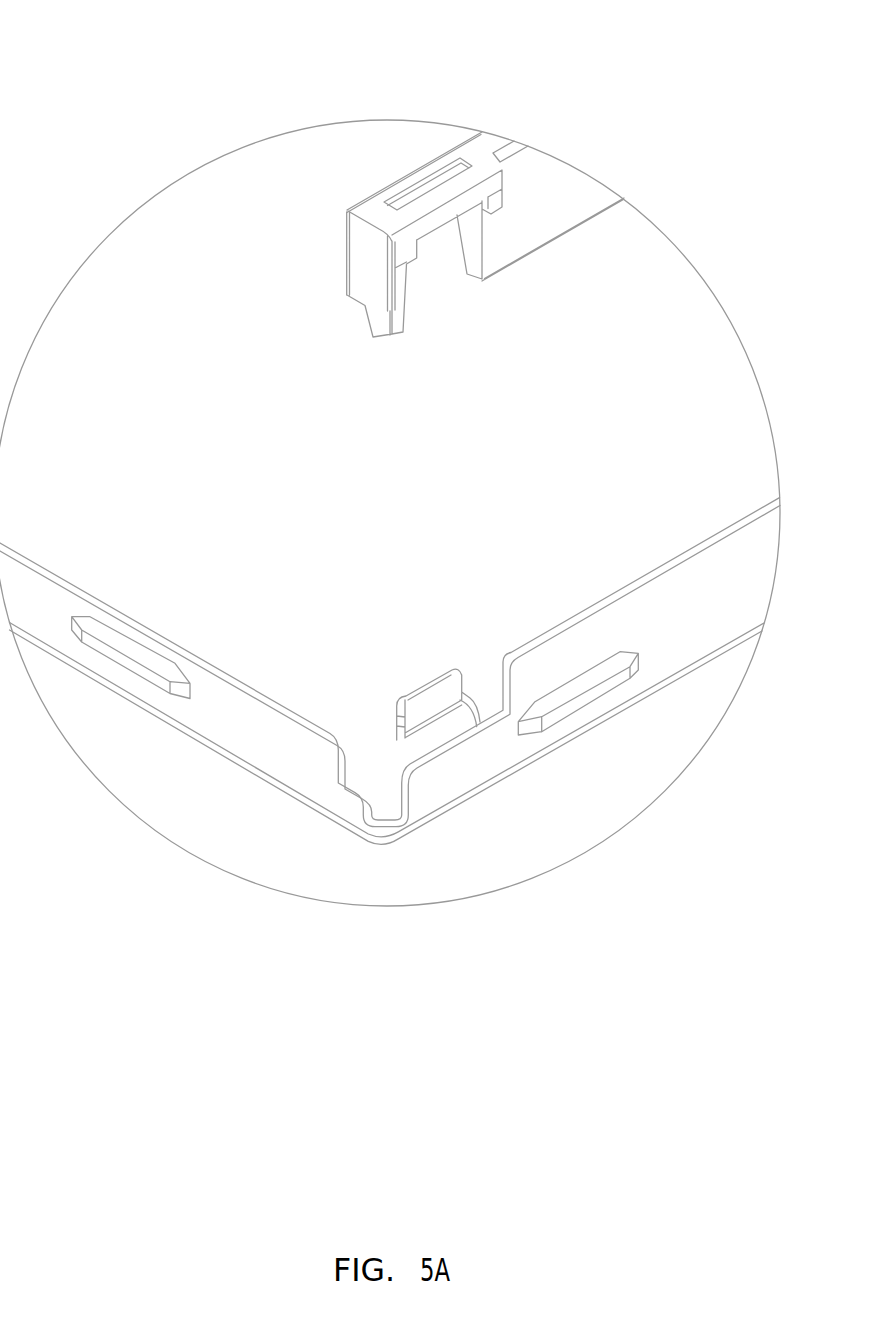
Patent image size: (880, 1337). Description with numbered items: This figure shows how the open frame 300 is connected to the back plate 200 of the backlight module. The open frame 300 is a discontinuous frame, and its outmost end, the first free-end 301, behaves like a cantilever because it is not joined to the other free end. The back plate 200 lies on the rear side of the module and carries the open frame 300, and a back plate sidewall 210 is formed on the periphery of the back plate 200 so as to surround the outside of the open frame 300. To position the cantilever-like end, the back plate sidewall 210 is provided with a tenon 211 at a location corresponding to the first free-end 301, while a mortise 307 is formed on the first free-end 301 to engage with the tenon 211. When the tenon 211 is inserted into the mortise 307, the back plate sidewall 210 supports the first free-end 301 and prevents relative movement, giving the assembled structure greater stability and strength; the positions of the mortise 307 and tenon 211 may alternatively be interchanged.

The back plate 200 is at (300, 678).
The back plate sidewall 210 is at (678, 620).
The tenon 211 is at (432, 705).
The open frame 300 is at (556, 188).
The first free-end 301 is at (362, 252).
The mortise 307 is at (427, 185).